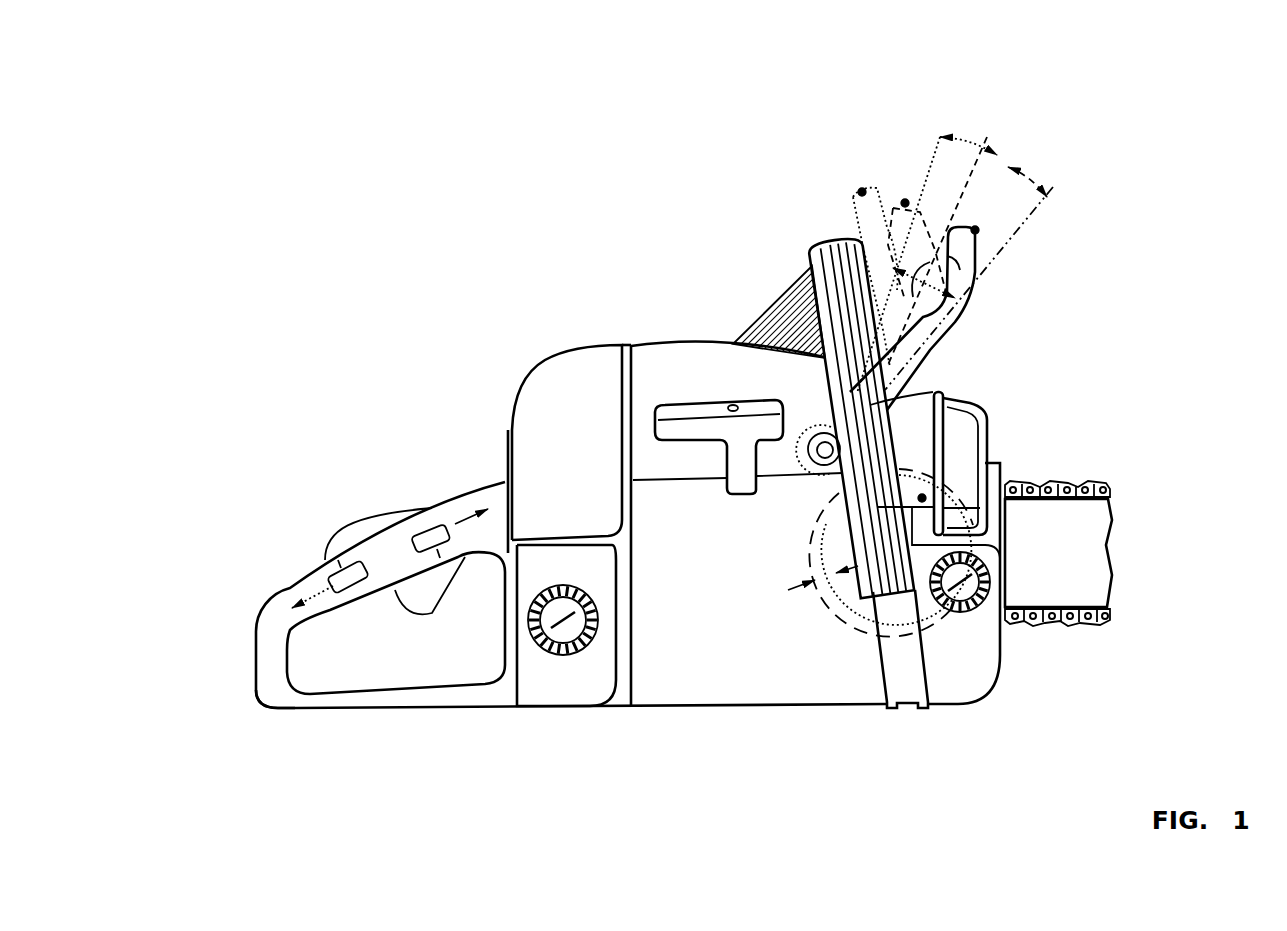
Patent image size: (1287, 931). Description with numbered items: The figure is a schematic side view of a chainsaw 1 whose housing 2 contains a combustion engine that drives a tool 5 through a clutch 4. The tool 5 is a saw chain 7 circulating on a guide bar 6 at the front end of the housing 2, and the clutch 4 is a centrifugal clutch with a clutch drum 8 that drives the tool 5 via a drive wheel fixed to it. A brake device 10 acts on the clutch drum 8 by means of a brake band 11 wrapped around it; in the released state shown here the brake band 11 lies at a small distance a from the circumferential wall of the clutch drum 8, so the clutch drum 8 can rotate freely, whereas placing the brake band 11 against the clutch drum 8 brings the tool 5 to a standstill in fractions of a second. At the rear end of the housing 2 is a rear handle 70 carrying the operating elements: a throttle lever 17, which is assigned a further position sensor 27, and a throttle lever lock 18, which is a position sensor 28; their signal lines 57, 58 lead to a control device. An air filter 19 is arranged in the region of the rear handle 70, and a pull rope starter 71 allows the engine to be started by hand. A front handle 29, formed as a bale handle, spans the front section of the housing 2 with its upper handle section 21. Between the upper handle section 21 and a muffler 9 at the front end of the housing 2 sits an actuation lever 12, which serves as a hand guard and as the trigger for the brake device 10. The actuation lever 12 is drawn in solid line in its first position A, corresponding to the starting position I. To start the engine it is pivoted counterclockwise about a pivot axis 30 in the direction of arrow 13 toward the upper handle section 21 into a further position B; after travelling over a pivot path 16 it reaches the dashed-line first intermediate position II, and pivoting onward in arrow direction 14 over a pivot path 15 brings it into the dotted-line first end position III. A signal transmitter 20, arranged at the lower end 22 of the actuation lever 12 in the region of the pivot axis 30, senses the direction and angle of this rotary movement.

The chainsaw 1 is at (700, 418).
The housing 2 is at (690, 670).
The clutch 4 is at (922, 498).
The tool 5 is at (1085, 636).
The guide bar 6 is at (1067, 553).
The saw chain 7 is at (1112, 487).
The clutch drum 8 is at (850, 612).
The muffler 9 is at (990, 477).
The brake device 10 is at (925, 458).
The brake band 11 is at (932, 623).
The actuation lever 12 is at (972, 247).
The arrow 13 is at (1008, 167).
The arrow direction 14 is at (940, 137).
The pivot path 15 is at (913, 297).
The pivot path 16 is at (966, 270).
The throttle lever 17 is at (420, 597).
The throttle lever lock 18 is at (340, 543).
The air filter 19 is at (558, 413).
The signal transmitter 20 is at (813, 460).
The upper handle section 21 is at (805, 345).
The lower end 22 is at (820, 425).
The position sensor 27 is at (422, 537).
The position sensor 28 is at (330, 577).
The front handle 29 is at (806, 244).
The pivot axis 30 is at (830, 468).
The signal line 57 is at (460, 523).
The signal line 58 is at (307, 600).
The rear handle 70 is at (267, 652).
The pull rope starter 71 is at (703, 458).
The first position A is at (999, 282).
The further position B is at (884, 182).
The starting position I is at (975, 230).
The first intermediate position II is at (905, 203).
The first end position III is at (859, 186).
The distance a is at (823, 589).